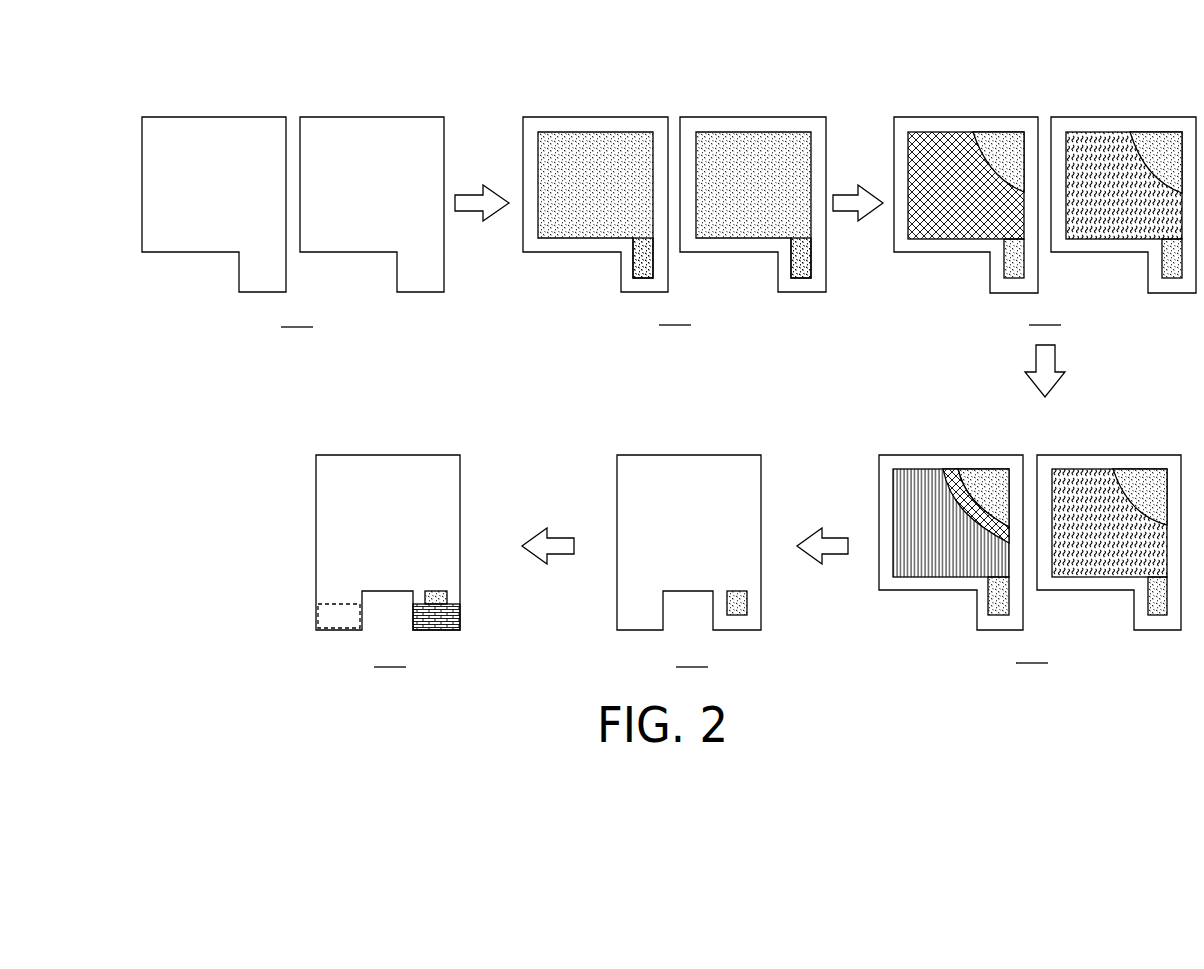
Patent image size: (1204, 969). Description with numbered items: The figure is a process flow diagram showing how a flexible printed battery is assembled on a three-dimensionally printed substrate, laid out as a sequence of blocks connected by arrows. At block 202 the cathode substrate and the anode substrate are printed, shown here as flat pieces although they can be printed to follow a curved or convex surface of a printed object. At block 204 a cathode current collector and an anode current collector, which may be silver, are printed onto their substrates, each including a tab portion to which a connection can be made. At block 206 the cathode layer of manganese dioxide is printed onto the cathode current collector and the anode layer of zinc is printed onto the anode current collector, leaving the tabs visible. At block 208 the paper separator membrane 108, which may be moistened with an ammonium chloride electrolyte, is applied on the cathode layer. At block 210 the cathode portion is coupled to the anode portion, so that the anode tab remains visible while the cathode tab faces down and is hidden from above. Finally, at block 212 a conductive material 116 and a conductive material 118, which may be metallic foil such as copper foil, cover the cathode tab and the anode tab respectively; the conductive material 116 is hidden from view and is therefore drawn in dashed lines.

The paper separator membrane 108 is at (920, 467).
The conductive material 116 is at (325, 617).
The conductive material 118 is at (462, 617).
The block 202 is at (297, 316).
The block 204 is at (675, 314).
The block 206 is at (1045, 314).
The block 208 is at (1032, 652).
The block 210 is at (692, 656).
The block 212 is at (390, 656).